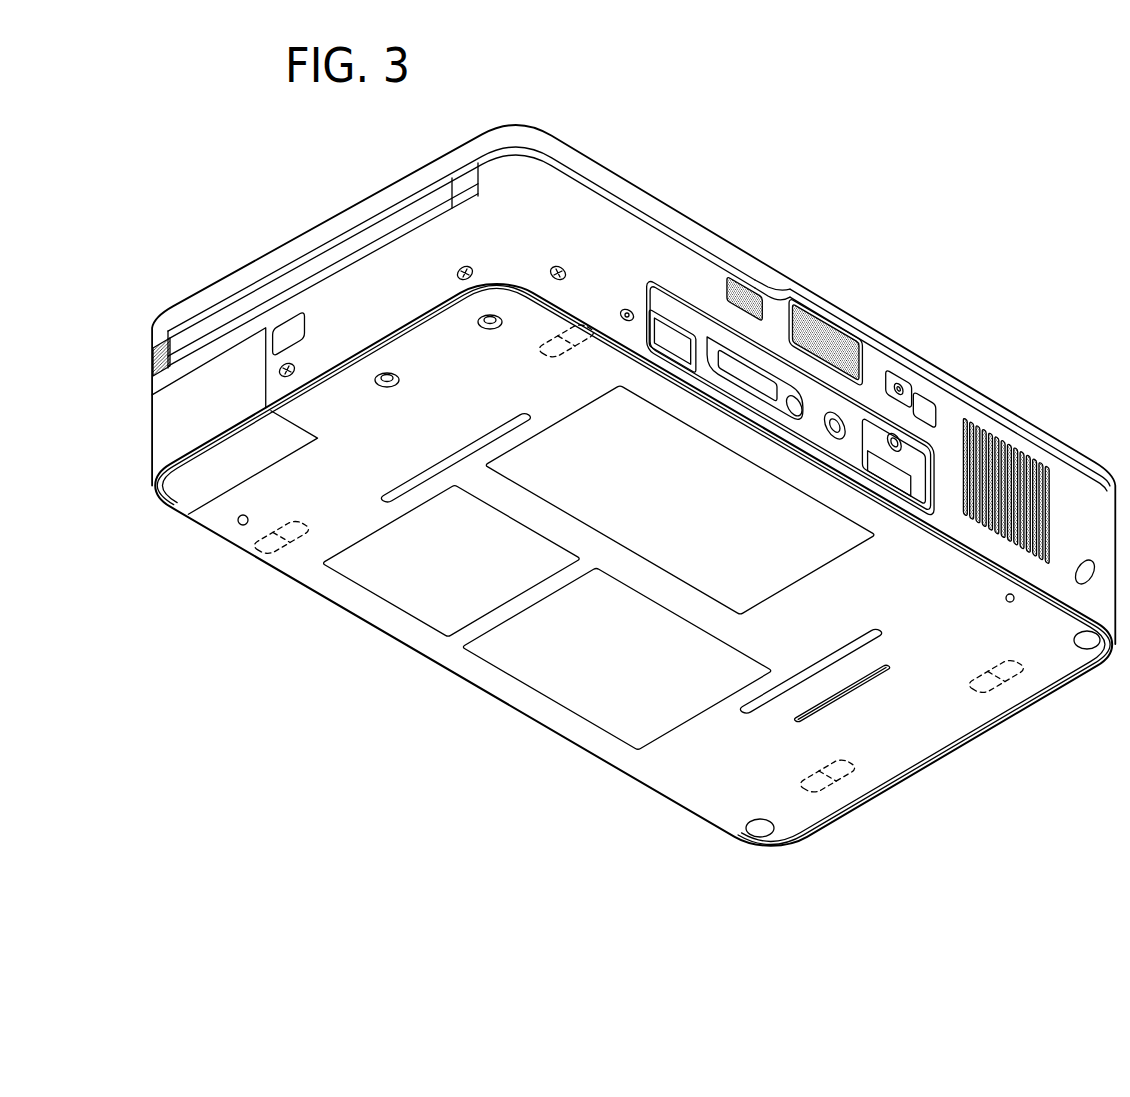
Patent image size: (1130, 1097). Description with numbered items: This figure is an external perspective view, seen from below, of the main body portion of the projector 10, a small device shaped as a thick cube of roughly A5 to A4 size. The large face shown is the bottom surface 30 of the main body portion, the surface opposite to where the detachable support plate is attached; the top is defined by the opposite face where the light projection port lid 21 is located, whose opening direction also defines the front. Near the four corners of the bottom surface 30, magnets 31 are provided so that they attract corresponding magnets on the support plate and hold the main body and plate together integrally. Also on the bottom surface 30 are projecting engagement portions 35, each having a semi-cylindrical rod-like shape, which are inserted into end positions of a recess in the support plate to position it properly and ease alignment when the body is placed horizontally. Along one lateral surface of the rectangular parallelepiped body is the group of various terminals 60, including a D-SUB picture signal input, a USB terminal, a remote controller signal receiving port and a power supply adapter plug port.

The projector 10 is at (893, 223).
The light projection port lid 21 is at (643, 217).
The bottom surface 30 is at (635, 568).
The magnets 31 is at (600, 322).
The engagement portions 35 is at (400, 493).
The group of various terminals 60 is at (870, 370).